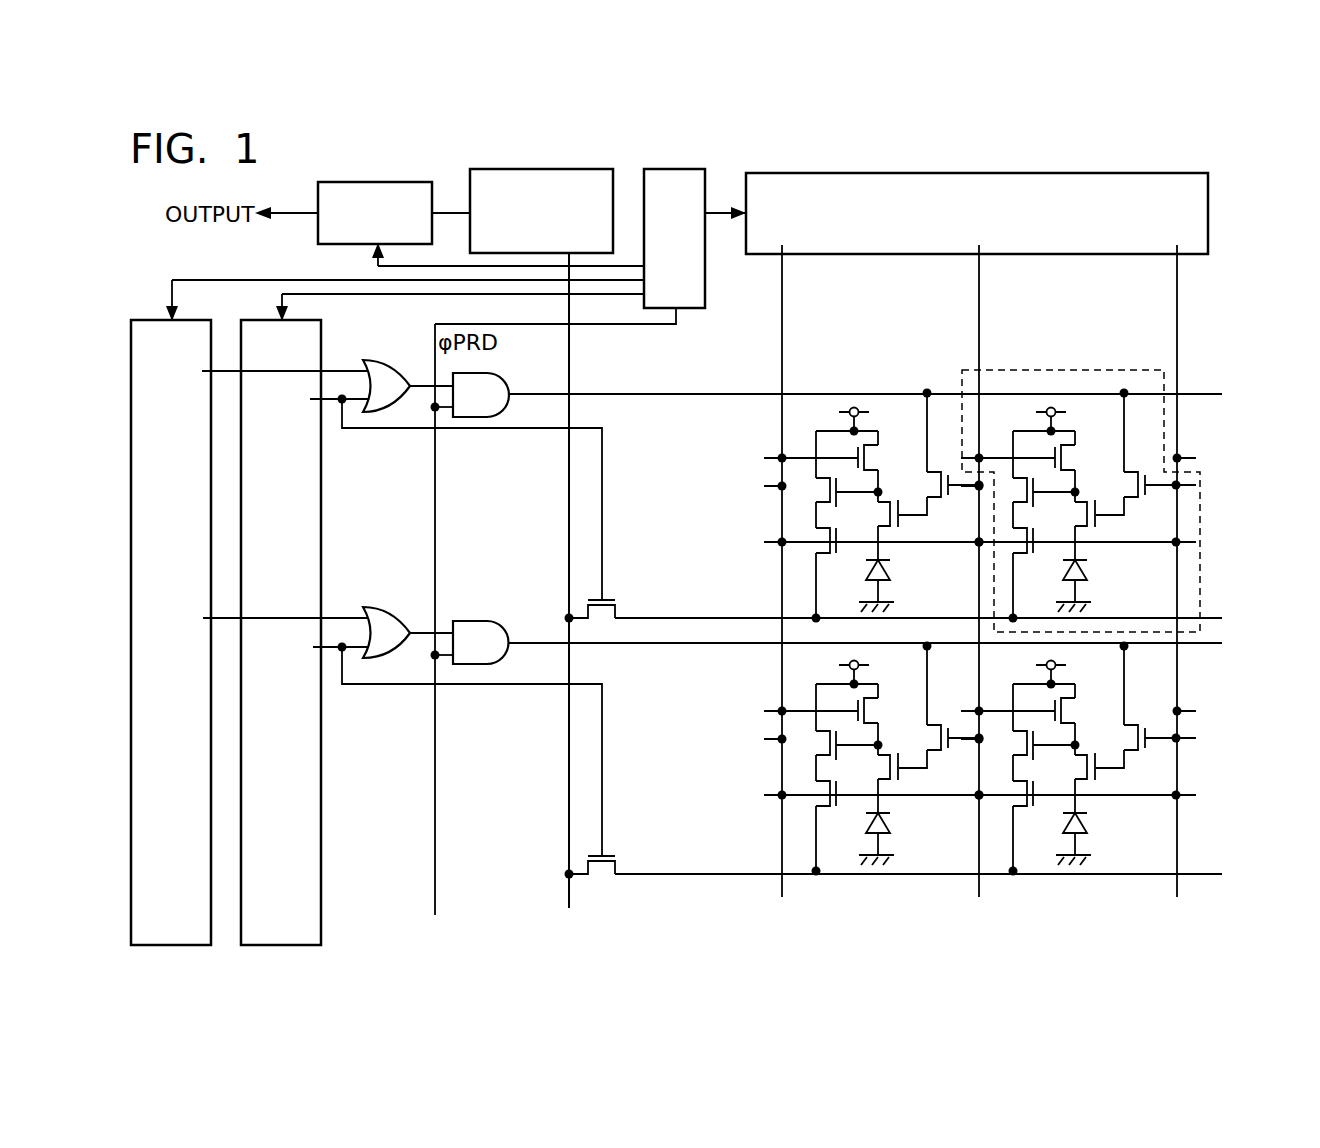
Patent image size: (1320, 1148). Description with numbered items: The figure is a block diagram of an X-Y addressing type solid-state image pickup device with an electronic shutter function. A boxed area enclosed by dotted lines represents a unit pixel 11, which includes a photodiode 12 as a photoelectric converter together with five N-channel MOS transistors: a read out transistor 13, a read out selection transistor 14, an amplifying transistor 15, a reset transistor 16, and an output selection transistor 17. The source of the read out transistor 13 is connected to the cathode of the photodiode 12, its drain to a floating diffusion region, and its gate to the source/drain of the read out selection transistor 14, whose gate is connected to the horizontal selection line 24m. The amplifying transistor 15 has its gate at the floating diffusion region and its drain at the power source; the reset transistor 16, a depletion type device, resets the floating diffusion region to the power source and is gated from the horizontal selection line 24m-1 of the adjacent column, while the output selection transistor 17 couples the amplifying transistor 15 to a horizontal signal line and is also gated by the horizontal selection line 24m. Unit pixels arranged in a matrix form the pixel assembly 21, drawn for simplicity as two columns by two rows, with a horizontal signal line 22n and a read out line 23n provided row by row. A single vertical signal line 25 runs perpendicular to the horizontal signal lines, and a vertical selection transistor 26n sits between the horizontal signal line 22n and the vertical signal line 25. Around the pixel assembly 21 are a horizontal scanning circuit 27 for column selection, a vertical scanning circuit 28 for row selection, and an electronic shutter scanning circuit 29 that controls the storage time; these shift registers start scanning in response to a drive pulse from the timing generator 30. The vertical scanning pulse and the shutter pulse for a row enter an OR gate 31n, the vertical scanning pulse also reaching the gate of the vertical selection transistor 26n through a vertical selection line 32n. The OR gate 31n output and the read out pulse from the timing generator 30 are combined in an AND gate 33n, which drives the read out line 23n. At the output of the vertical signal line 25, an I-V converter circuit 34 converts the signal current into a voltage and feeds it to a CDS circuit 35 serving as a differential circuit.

The unit pixel 11 is at (1116, 501).
The photodiode 12 is at (1097, 579).
The read out transistor 13 is at (1114, 521).
The read out selection transistor 14 is at (1145, 457).
The amplifying transistor 15 is at (1045, 500).
The reset transistor 16 is at (1089, 458).
The output selection transistor 17 is at (1034, 563).
The pixel assembly 21 is at (926, 899).
The horizontal signal line 22n is at (1210, 874).
The read out line 23n is at (1218, 643).
The horizontal selection line 24m-1 is at (979, 322).
The horizontal selection line 24m is at (1177, 322).
The vertical signal line 25 is at (569, 898).
The vertical selection transistor 26n is at (618, 862).
The horizontal scanning circuit 27 is at (1208, 205).
The vertical scanning circuit 28 is at (290, 946).
The electronic shutter scanning circuit 29 is at (180, 946).
The timing generator 30 is at (692, 308).
The OR gate 31n is at (380, 607).
The vertical selection line 32n is at (372, 684).
The AND gate 33n is at (483, 621).
The I-V converter circuit 34 is at (470, 182).
The CDS circuit 35 is at (318, 230).